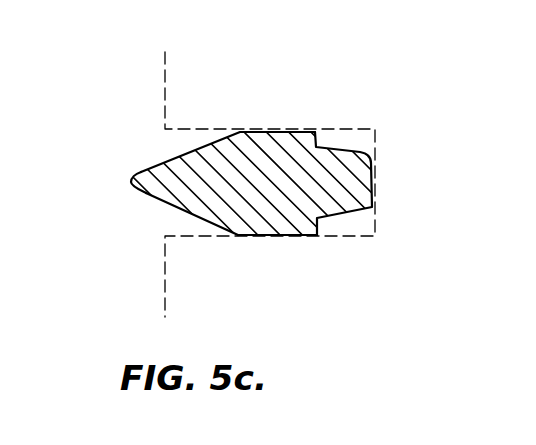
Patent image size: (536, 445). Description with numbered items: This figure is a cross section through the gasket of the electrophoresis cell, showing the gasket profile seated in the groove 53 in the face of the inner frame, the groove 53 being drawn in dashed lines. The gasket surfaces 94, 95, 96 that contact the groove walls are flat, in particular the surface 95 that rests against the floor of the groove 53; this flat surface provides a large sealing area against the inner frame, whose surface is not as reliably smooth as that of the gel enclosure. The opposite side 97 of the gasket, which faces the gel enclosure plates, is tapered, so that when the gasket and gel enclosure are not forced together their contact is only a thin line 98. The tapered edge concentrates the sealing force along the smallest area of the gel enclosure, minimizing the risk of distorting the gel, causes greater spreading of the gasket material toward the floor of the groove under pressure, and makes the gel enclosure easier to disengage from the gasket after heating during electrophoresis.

The groove 53 is at (186, 130).
The gasket surface 94 is at (270, 131).
The gasket surface 95 is at (374, 182).
The gasket surface 96 is at (263, 237).
The side of the gasket 97 is at (157, 202).
The thin line 98 is at (131, 182).